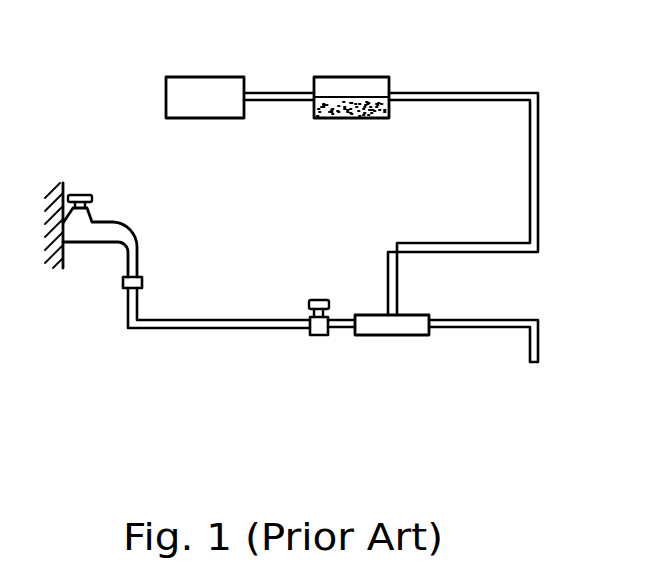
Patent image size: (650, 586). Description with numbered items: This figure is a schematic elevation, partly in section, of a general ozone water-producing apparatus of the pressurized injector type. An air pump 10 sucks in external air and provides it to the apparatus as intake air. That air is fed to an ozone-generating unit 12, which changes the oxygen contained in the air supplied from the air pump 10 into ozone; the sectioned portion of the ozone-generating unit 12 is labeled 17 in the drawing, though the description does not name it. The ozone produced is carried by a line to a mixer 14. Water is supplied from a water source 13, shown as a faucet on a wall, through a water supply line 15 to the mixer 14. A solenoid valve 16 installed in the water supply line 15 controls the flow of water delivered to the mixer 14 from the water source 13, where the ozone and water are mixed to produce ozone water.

The air pump 10 is at (201, 77).
The ozone-generating unit 12 is at (350, 77).
The filter medium 17 is at (352, 118).
The water source 13 is at (88, 242).
The water supply line 15 is at (217, 328).
The solenoid valve 16 is at (316, 335).
The mixer 14 is at (390, 335).